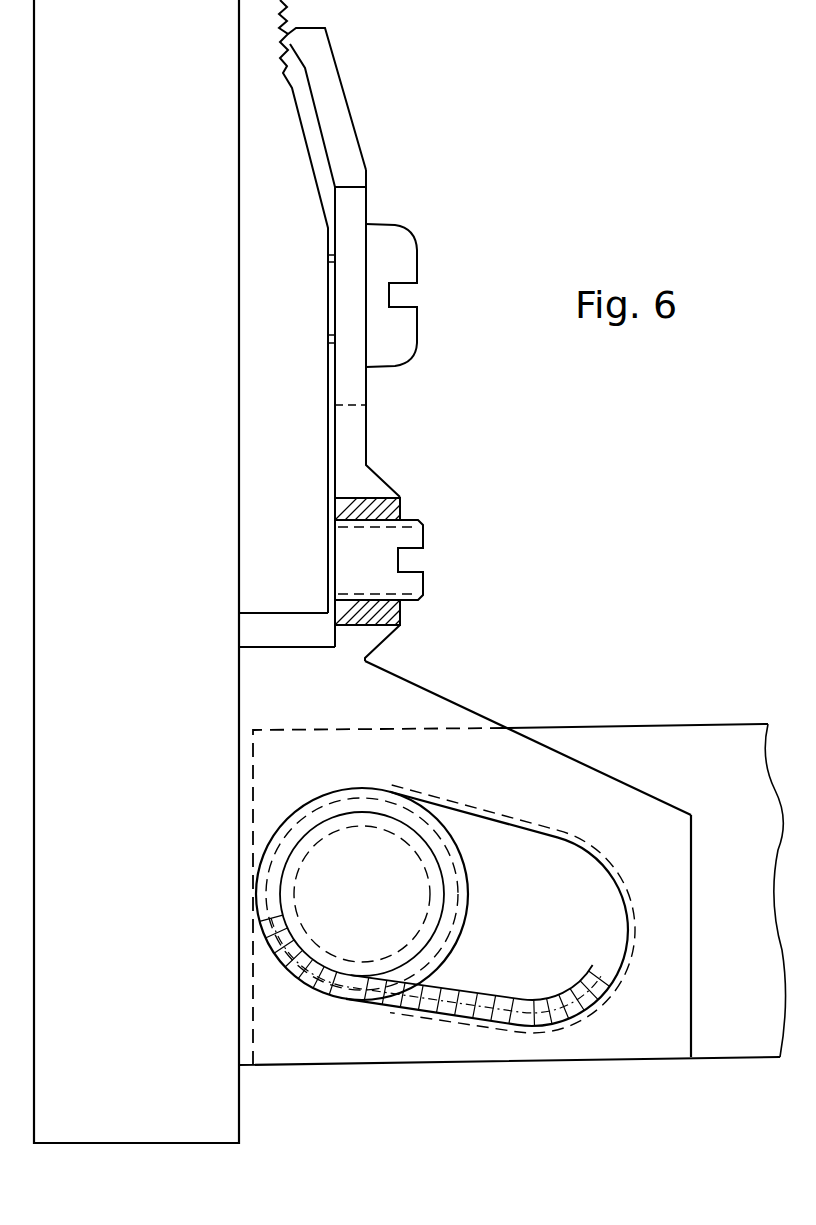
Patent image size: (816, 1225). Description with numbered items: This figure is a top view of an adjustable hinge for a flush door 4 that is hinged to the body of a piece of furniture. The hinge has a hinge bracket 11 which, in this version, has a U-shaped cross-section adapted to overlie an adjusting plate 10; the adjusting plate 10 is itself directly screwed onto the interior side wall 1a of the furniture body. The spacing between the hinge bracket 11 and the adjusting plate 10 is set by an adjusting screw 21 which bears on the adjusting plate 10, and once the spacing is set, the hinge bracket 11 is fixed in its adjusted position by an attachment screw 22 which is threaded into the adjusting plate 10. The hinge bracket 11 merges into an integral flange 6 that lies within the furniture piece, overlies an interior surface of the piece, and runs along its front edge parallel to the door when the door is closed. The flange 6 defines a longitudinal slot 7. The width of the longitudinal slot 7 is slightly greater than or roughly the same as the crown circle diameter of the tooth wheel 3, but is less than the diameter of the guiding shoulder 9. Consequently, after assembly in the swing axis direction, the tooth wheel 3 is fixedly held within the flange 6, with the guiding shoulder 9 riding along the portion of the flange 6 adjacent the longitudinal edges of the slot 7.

The interior side wall 1a is at (184, 237).
The adjusting plate 10 is at (303, 180).
The hinge bracket 11 is at (366, 420).
The attachment screw 22 is at (417, 250).
The adjusting screw 21 is at (423, 535).
The flush door 4 is at (590, 726).
The flange 6 is at (640, 805).
The guiding shoulder 9 is at (368, 786).
The tooth wheel 3 is at (400, 857).
The longitudinal slot 7 is at (508, 847).